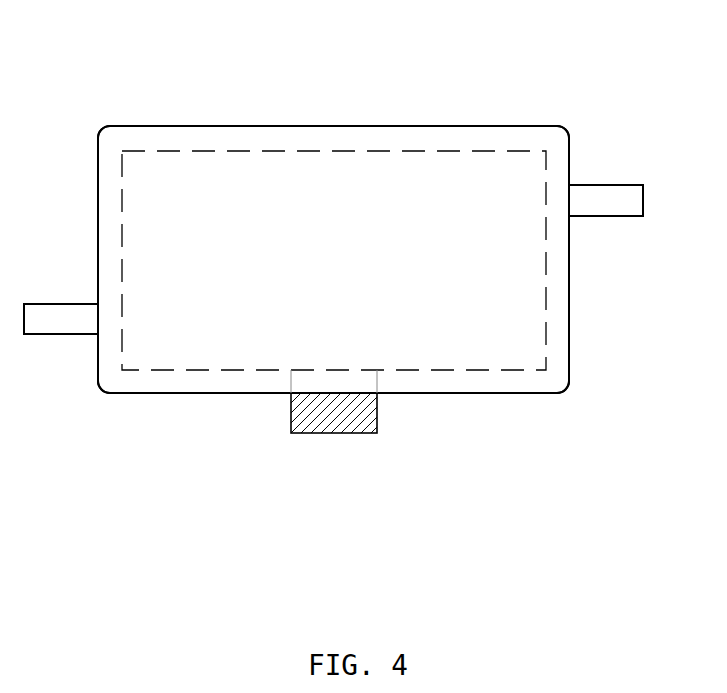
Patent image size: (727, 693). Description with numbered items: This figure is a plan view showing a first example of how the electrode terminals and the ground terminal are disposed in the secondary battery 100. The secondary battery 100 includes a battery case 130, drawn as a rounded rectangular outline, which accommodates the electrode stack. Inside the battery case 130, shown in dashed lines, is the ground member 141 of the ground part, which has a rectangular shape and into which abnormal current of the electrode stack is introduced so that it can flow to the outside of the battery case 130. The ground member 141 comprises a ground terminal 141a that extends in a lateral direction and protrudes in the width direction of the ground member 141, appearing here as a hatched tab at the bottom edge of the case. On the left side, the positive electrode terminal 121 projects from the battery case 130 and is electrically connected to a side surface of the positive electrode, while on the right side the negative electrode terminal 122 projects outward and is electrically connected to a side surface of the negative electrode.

The secondary battery 100 is at (464, 78).
The battery case 130 is at (333, 126).
The ground member 141 is at (499, 146).
The ground terminal 141a is at (334, 434).
The positive electrode terminal 121 is at (41, 331).
The negative electrode terminal 122 is at (640, 199).